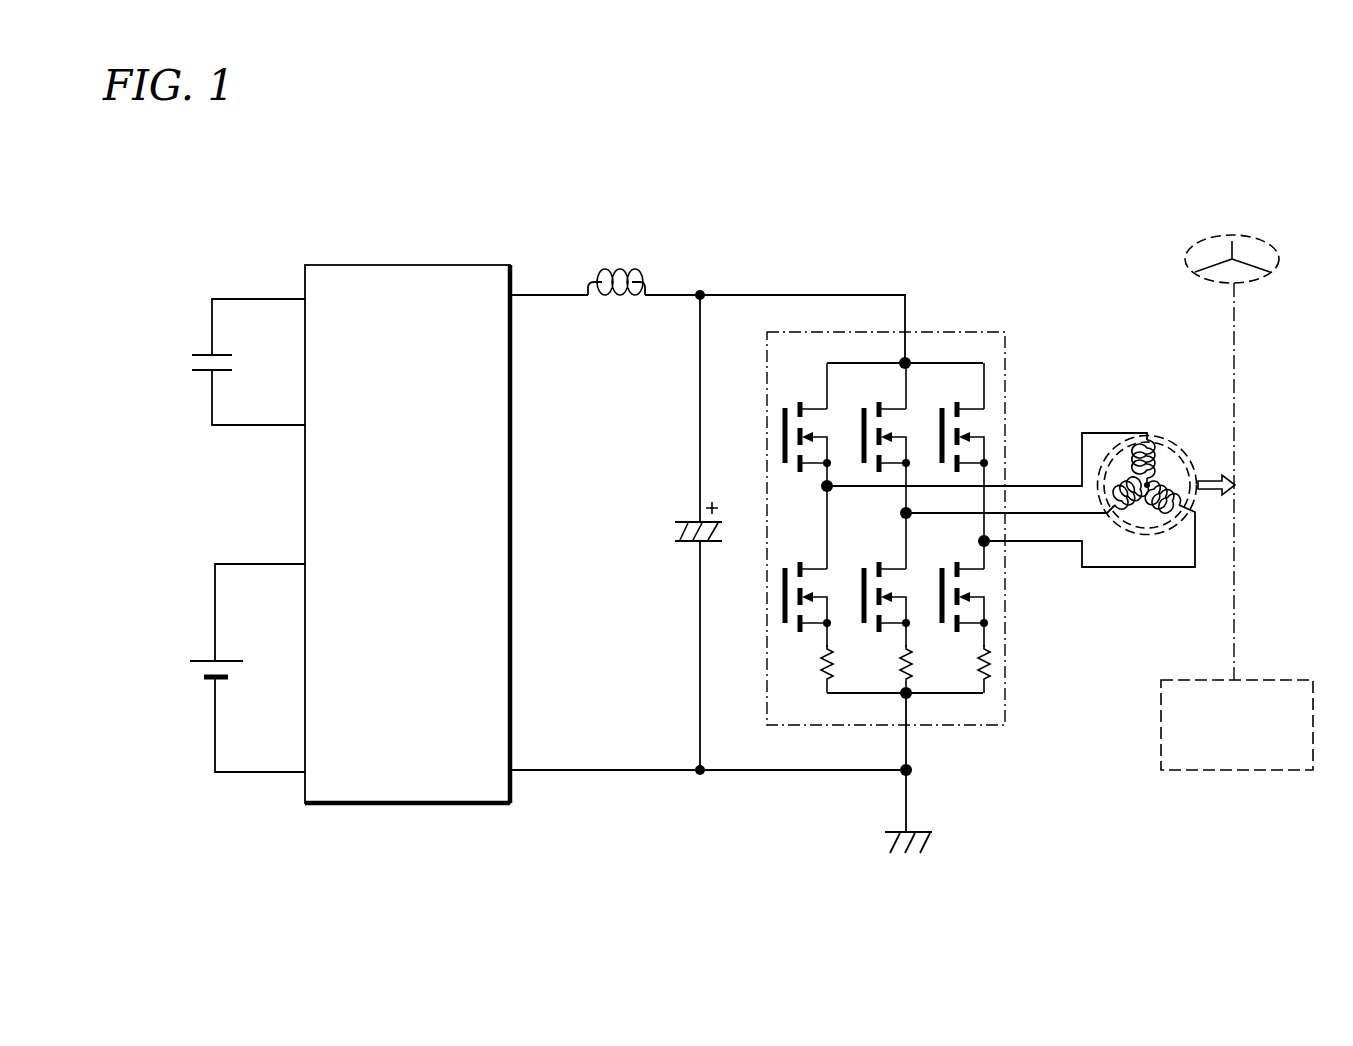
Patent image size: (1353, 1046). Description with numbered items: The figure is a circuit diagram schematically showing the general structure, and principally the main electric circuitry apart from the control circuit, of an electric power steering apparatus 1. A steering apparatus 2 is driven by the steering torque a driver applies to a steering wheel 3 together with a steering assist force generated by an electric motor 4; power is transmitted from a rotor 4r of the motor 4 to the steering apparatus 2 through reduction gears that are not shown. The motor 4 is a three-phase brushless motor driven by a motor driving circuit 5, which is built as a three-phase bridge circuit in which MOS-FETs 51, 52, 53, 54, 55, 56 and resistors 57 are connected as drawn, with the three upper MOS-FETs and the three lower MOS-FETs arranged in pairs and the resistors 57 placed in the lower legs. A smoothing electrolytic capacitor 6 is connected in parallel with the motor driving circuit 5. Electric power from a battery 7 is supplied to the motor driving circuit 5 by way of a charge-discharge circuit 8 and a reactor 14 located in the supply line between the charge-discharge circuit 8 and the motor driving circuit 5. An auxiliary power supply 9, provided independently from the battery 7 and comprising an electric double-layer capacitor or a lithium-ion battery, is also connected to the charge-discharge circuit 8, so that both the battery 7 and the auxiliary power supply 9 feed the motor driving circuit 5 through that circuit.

The electric power steering apparatus 1 is at (963, 186).
The steering apparatus 2 is at (1256, 680).
The steering wheel 3 is at (1200, 243).
The electric motor 4 is at (1167, 462).
The rotor 4r is at (1165, 447).
The motor driving circuit 5 is at (886, 494).
The smoothing electrolytic capacitor 6 is at (686, 520).
The battery 7 is at (206, 660).
The charge-discharge circuit 8 is at (413, 265).
The auxiliary power supply 9 is at (208, 352).
The reactor 14 is at (620, 282).
The MOS-FET 51 is at (798, 403).
The MOS-FET 52 is at (878, 403).
The MOS-FET 53 is at (956, 403).
The MOS-FET 54 is at (798, 563).
The MOS-FET 55 is at (878, 563).
The MOS-FET 56 is at (956, 563).
The resistors 57 is at (822, 660).